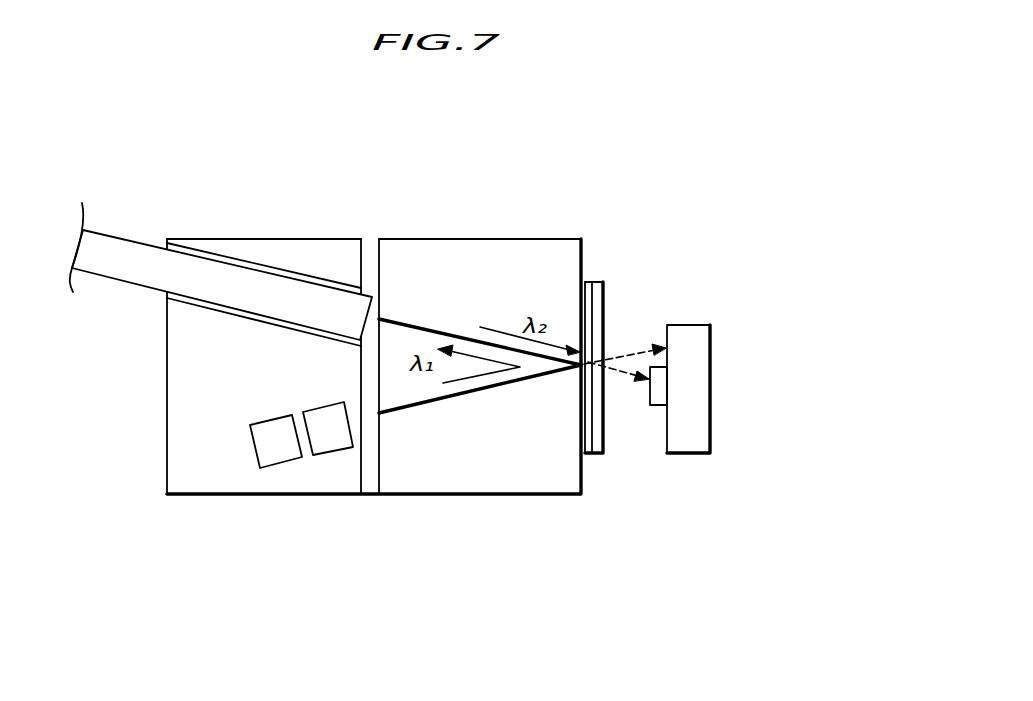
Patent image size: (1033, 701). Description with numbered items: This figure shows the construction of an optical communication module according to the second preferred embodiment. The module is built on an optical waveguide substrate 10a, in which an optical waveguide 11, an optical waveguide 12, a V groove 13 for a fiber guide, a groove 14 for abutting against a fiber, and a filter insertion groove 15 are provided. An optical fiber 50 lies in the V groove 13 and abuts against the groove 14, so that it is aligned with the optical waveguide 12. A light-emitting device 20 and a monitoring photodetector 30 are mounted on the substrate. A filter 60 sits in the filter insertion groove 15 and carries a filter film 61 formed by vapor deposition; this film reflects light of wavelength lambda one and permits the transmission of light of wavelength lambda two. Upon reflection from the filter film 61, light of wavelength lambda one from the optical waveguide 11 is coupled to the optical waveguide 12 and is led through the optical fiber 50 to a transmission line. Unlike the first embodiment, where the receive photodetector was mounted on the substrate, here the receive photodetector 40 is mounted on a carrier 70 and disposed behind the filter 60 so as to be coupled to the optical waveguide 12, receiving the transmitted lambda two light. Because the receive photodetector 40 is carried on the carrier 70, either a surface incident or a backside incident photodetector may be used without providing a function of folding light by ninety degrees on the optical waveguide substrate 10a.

The optical waveguide substrate 10a is at (415, 239).
The optical waveguide 11 is at (447, 398).
The optical waveguide 12 is at (453, 336).
The V groove for a fiber guide 13 is at (233, 258).
The groove for abutting against a fiber 14 is at (367, 483).
The filter insertion groove 15 is at (582, 474).
The light-emitting device 20 is at (316, 411).
The monitoring photodetector 30 is at (270, 457).
The receive photodetector 40 is at (663, 373).
The optical fiber 50 is at (118, 257).
The filter 60 is at (604, 282).
The filter film 61 is at (588, 282).
The carrier 70 is at (695, 443).